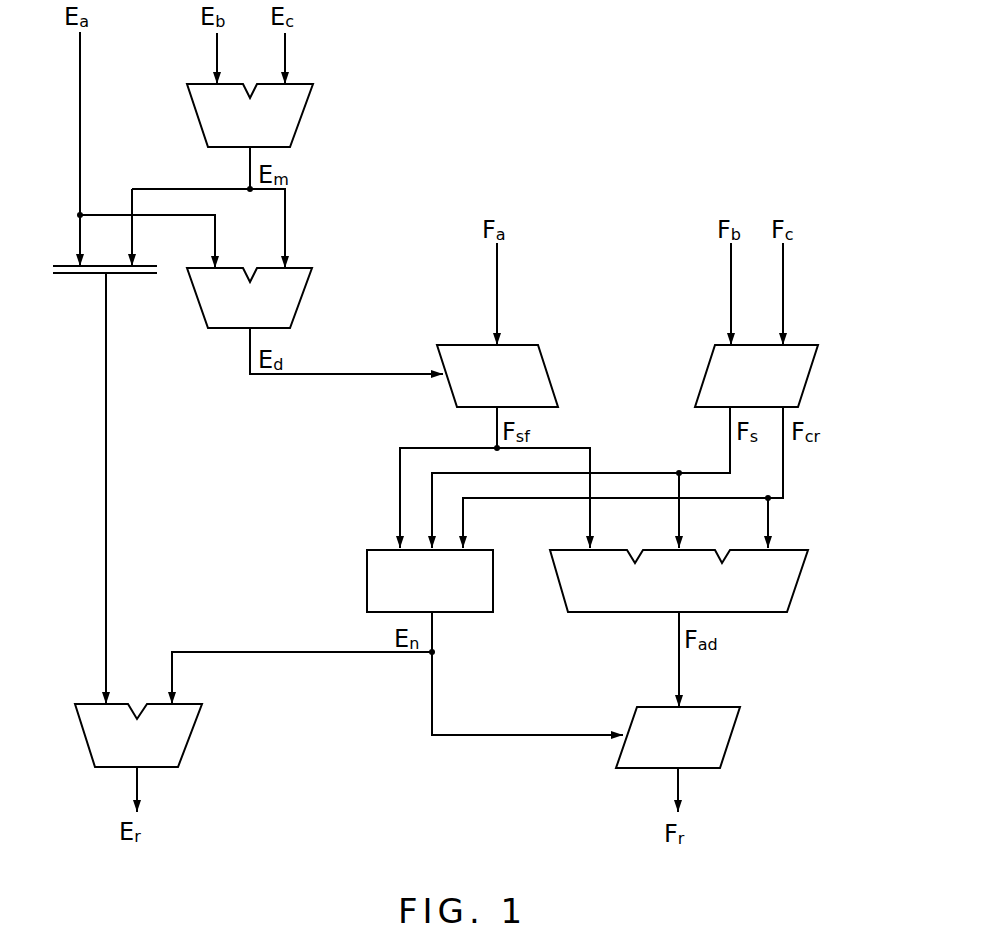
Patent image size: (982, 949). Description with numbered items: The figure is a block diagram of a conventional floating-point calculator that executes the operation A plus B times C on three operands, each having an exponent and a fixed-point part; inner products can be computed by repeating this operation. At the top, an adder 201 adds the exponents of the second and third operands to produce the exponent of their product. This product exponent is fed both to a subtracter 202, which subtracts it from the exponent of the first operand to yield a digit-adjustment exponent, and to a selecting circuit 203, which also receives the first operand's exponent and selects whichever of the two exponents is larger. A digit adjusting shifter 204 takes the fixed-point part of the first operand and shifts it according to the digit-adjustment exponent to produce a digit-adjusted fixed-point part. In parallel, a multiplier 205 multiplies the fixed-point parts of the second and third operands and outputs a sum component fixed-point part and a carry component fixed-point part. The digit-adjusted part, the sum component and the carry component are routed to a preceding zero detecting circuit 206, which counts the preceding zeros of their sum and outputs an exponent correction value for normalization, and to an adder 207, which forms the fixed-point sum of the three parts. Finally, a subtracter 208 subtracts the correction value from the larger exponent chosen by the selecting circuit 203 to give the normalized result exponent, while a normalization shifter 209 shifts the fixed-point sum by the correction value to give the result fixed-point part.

The adder 201 is at (303, 120).
The subtracter 202 is at (303, 295).
The selecting circuit 203 is at (70, 275).
The digit adjusting shifter 204 is at (550, 373).
The multiplier 205 is at (810, 373).
The preceding zero detecting circuit 206 is at (473, 613).
The adder 207 is at (792, 603).
The subtracter 208 is at (193, 737).
The normalization shifter 209 is at (733, 733).